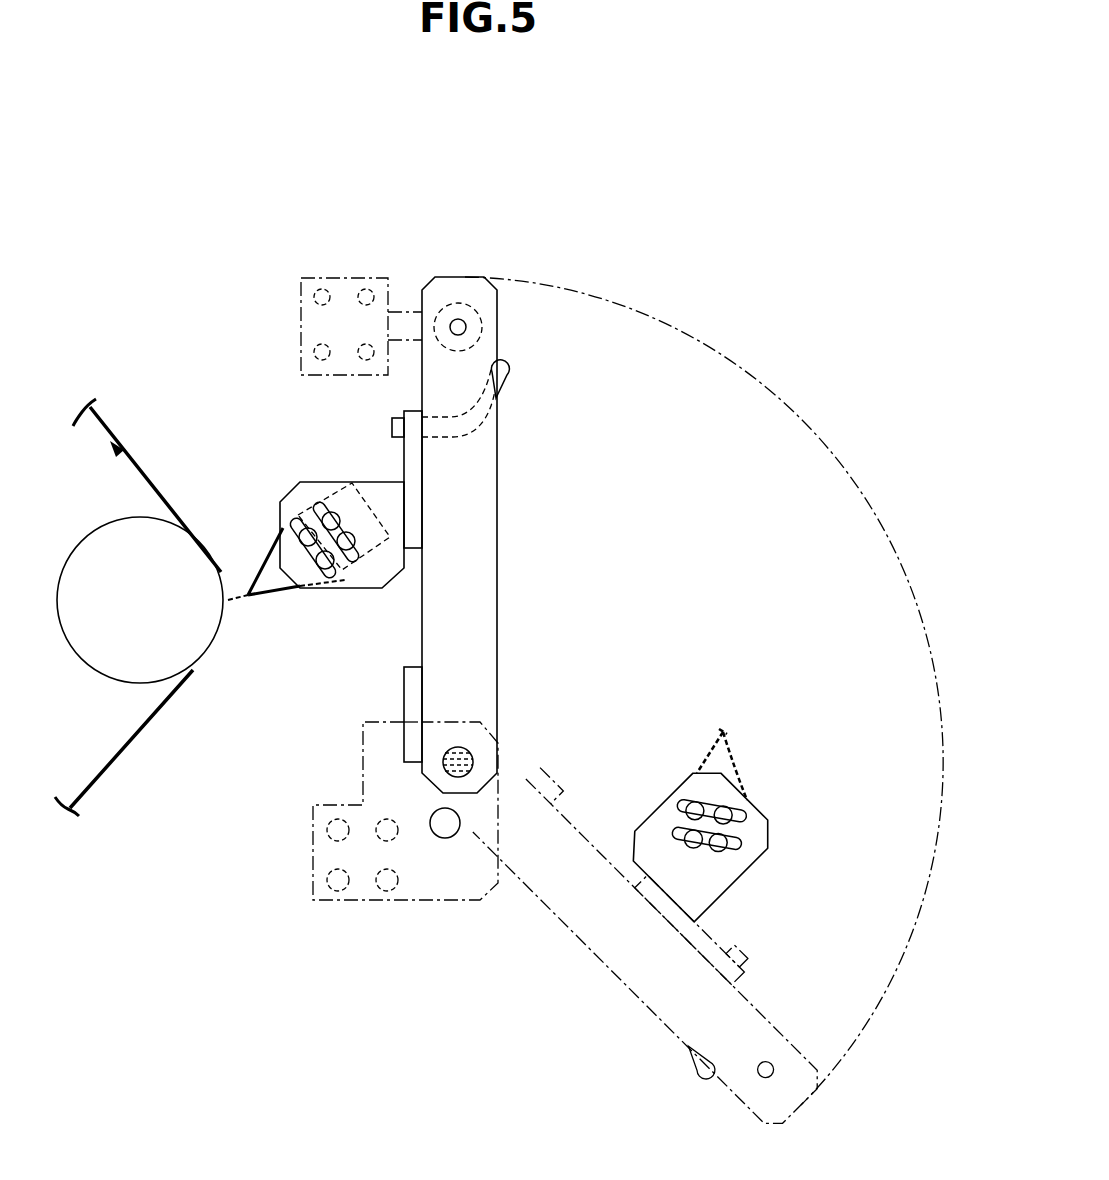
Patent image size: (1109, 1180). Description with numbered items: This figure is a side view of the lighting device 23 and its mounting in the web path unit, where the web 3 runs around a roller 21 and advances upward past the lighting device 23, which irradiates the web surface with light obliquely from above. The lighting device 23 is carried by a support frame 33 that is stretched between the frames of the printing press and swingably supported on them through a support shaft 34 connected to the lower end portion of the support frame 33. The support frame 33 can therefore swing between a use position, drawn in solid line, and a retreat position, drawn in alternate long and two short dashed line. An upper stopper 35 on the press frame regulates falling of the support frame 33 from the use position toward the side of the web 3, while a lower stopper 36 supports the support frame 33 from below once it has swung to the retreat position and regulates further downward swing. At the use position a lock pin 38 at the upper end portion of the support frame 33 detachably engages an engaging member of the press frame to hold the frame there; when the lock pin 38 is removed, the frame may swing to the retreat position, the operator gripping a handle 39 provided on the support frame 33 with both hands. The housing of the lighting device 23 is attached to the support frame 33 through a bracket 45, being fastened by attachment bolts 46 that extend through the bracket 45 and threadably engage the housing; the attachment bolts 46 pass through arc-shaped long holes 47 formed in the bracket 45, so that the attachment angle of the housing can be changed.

The web 3 is at (121, 754).
The roller 21 is at (84, 668).
The lighting device 23 is at (277, 612).
The support frame 33 is at (505, 545).
The support shaft 34 is at (459, 748).
The upper stopper 35 is at (397, 307).
The lower stopper 36 is at (441, 840).
The lock pin 38 is at (458, 318).
The handle 39 is at (508, 360).
The bracket 45 is at (292, 492).
The attachment bolt 46 is at (332, 512).
The arc-shaped long hole 47 is at (355, 566).